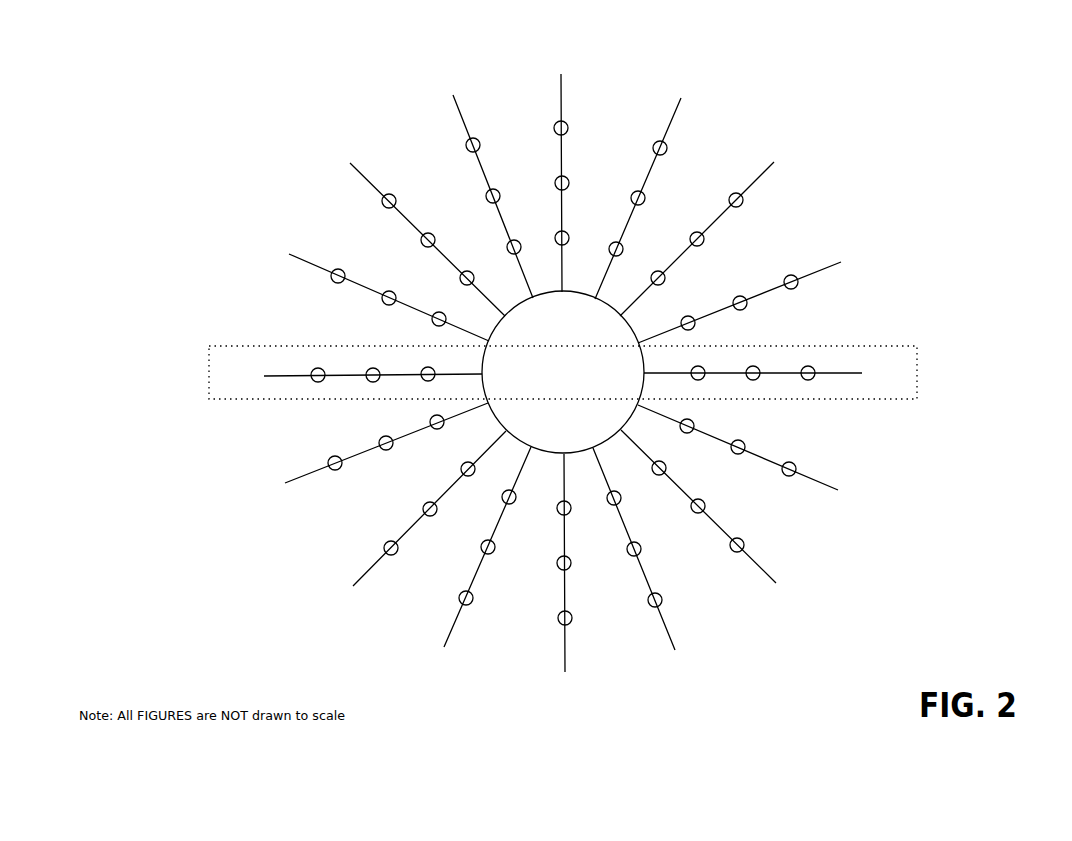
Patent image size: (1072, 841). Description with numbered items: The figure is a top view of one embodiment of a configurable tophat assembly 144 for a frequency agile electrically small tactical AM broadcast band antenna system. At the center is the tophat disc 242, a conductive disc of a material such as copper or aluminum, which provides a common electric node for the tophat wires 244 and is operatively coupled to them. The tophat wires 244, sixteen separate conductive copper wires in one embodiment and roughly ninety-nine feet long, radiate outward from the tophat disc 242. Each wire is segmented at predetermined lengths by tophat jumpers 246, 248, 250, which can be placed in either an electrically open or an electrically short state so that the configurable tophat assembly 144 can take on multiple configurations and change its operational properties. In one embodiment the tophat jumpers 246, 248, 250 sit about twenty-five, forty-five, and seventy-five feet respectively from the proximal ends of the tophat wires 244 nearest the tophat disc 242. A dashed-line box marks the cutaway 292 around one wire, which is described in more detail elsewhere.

The configurable tophat assembly 144 is at (553, 722).
The tophat disc 242 is at (550, 431).
The tophat wires 244 is at (561, 83).
The tophat jumpers 246 is at (569, 238).
The tophat jumpers 248 is at (569, 183).
The tophat jumpers 250 is at (568, 128).
The cutaway 292 is at (209, 372).